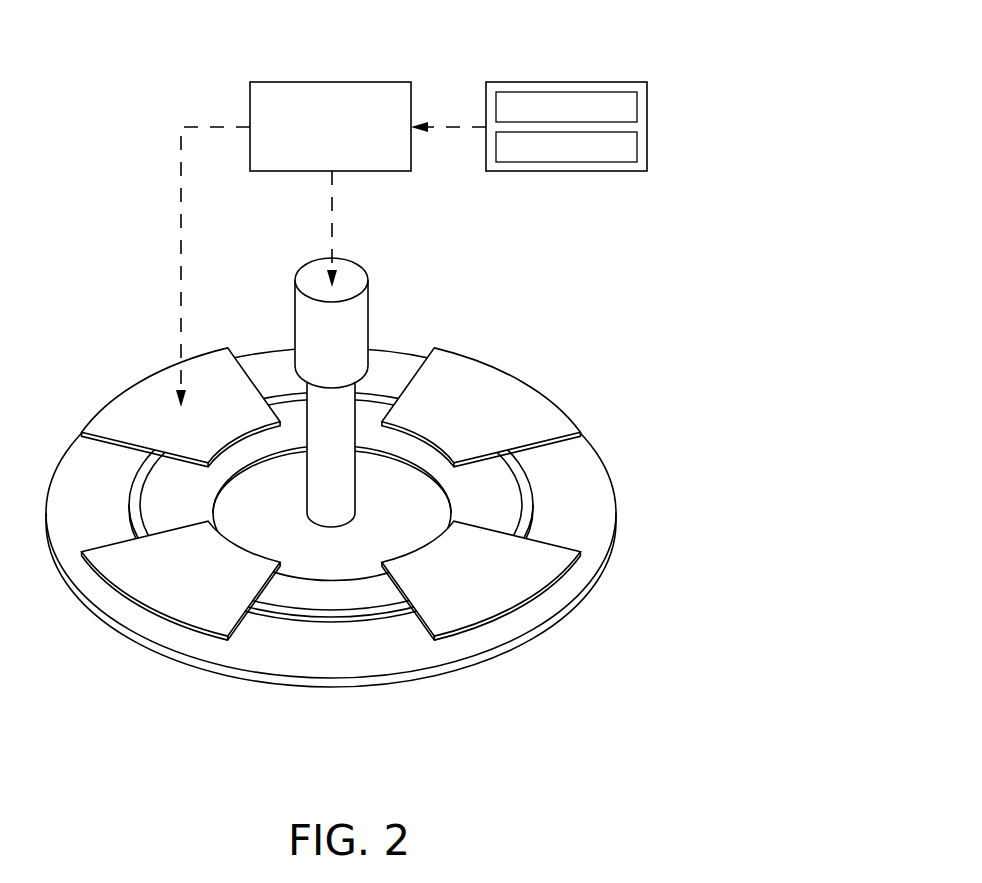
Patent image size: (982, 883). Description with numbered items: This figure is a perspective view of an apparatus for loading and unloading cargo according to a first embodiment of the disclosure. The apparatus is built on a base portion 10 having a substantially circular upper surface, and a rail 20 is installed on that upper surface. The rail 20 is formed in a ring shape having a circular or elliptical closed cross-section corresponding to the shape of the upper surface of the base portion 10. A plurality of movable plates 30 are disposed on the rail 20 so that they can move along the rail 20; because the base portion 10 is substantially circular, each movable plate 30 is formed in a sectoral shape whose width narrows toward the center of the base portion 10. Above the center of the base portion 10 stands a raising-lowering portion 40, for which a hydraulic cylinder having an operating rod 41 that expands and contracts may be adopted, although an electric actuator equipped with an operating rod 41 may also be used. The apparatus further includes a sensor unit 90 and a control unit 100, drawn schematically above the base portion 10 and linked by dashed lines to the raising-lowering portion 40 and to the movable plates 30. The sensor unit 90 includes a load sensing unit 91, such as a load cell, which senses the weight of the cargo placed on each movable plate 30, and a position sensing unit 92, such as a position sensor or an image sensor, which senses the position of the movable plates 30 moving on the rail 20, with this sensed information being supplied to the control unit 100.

The base portion 10 is at (333, 658).
The rail 20 is at (382, 617).
The movable plates 30 is at (467, 612).
The raising-lowering portion 40 is at (360, 322).
The operating rod 41 is at (325, 516).
The sensor unit 90 is at (566, 102).
The load sensing unit 91 is at (583, 117).
The position sensing unit 92 is at (583, 157).
The control unit 100 is at (372, 82).